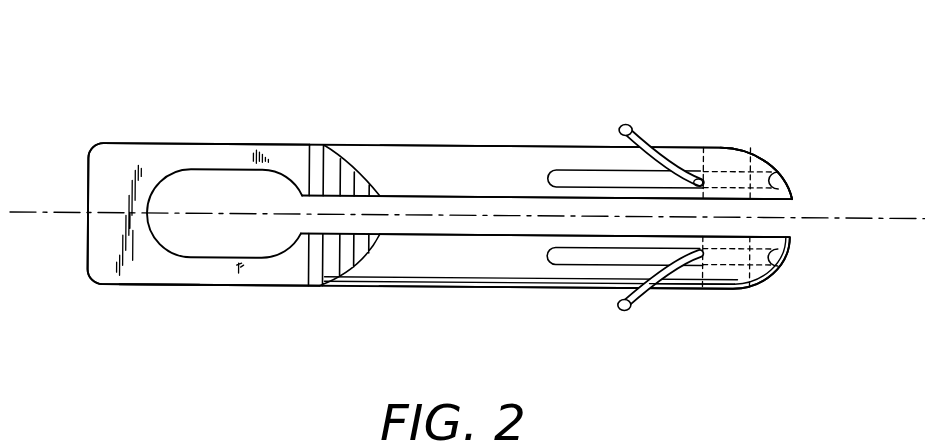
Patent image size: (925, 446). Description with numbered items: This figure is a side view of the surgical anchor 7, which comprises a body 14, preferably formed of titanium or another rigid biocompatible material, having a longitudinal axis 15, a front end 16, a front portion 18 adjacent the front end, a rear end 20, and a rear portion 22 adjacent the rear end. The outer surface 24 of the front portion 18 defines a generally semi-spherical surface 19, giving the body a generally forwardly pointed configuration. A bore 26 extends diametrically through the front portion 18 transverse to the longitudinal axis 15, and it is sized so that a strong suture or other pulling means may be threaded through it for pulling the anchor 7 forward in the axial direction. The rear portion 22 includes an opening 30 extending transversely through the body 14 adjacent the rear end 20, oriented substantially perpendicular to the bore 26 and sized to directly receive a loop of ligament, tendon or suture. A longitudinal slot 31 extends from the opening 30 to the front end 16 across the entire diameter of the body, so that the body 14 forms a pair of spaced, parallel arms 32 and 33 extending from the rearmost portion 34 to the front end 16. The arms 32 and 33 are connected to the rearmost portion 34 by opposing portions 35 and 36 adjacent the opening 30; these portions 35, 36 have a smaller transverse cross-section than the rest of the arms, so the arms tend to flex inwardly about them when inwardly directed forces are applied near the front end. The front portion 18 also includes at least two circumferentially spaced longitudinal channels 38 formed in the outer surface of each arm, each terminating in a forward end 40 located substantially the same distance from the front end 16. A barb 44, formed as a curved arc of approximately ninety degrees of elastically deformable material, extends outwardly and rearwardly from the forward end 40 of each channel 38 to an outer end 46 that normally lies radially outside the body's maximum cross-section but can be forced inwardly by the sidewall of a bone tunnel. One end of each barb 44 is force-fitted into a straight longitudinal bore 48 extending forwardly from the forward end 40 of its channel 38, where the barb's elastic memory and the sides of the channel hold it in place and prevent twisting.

The surgical anchor 7 is at (463, 82).
The body 14 is at (498, 135).
The longitudinal axis 15 is at (815, 218).
The front end 16 is at (790, 191).
The front portion 18 is at (678, 298).
The semi-spherical surface 19 is at (760, 162).
The rear end 20 is at (88, 230).
The rear portion 22 is at (157, 287).
The outer surface 24 is at (690, 290).
The bore 26 is at (733, 295).
The opening 30 is at (214, 184).
The longitudinal slot 31 is at (477, 227).
The arm 32 is at (398, 157).
The arm 33 is at (395, 272).
The rearmost portion 34 is at (128, 263).
The portion 35 is at (200, 150).
The portion 36 is at (218, 273).
The longitudinal channel 38 is at (573, 181).
The forward end 40 is at (688, 180).
The barb 44 is at (640, 141).
The outer end 46 is at (621, 123).
The longitudinal bore 48 is at (748, 150).